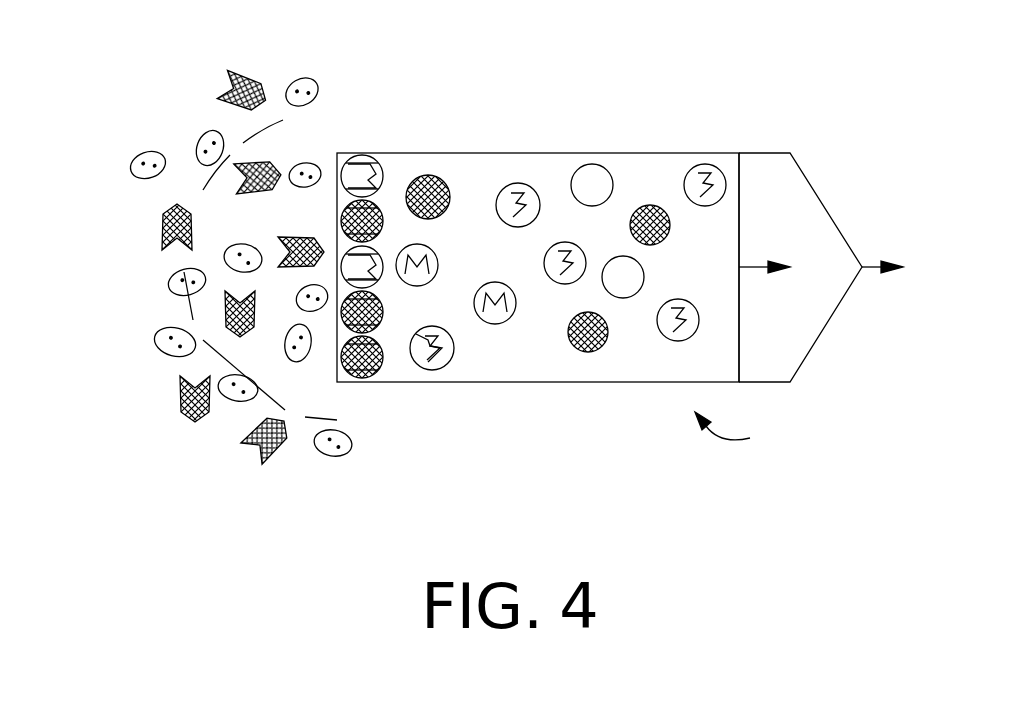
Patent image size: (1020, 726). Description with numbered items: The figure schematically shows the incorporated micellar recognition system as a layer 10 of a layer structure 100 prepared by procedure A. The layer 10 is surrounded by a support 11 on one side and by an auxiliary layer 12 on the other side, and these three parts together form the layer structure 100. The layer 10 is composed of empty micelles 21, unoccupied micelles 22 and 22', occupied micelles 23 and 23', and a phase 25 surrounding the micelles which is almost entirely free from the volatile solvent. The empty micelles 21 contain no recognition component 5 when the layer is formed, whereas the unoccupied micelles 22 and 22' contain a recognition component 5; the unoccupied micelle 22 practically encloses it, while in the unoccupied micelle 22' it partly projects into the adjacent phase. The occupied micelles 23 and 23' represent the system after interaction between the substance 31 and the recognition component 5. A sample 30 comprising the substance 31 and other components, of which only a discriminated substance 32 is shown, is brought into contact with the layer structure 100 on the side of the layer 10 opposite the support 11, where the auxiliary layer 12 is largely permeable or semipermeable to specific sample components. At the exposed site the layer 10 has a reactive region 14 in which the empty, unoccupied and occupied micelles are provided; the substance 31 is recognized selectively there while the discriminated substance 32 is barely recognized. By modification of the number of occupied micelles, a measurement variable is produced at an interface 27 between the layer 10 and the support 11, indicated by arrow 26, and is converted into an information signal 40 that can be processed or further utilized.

The recognition component 5 is at (414, 343).
The layer 10 is at (505, 153).
The support 11 is at (808, 230).
The auxiliary layer 12 is at (303, 118).
The reactive region 14 is at (346, 365).
The empty micelles 21 is at (601, 167).
The unoccupied micelle 22 is at (551, 258).
The unoccupied micelle 22' is at (543, 150).
The occupied micelles 23 is at (507, 204).
The occupied micelle 23' is at (664, 173).
The phase 25 is at (528, 357).
The arrow 26 is at (756, 266).
The interface 27 is at (741, 190).
The sample 30 is at (178, 125).
The substance 31 is at (225, 75).
The discriminated substance 32 is at (130, 163).
The information signal 40 is at (865, 265).
The layer structure 100 is at (808, 455).